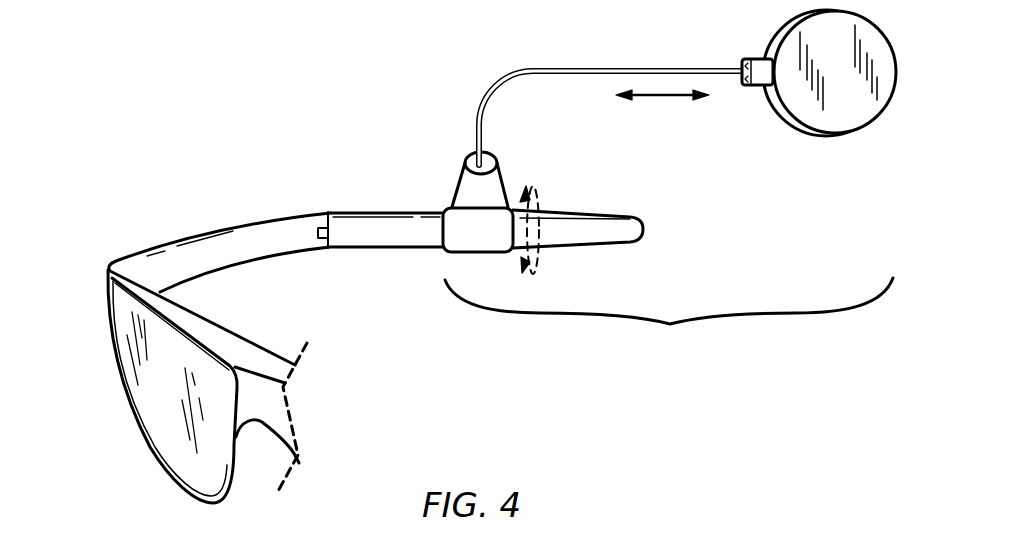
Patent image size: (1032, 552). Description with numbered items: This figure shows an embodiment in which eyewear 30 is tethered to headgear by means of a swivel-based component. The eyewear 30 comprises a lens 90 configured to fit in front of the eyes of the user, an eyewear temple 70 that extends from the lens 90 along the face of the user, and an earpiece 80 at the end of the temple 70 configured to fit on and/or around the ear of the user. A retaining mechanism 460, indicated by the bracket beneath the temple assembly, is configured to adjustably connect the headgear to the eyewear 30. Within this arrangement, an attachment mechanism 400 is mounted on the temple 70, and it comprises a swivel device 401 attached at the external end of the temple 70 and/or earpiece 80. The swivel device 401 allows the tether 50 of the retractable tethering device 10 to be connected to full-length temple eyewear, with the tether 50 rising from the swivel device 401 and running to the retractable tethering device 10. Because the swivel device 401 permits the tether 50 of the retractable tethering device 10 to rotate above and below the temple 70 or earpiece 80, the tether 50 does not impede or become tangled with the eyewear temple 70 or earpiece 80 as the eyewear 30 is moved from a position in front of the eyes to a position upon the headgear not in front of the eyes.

The retractable tethering device 10 is at (847, 137).
The eyewear 30 is at (388, 397).
The tether 50 is at (623, 70).
The eyewear temple 70 is at (253, 216).
The earpiece 80 is at (602, 215).
The lens 90 is at (120, 408).
The attachment mechanism 400 is at (435, 257).
The swivel device 401 is at (458, 183).
The retaining mechanism 460 is at (669, 314).